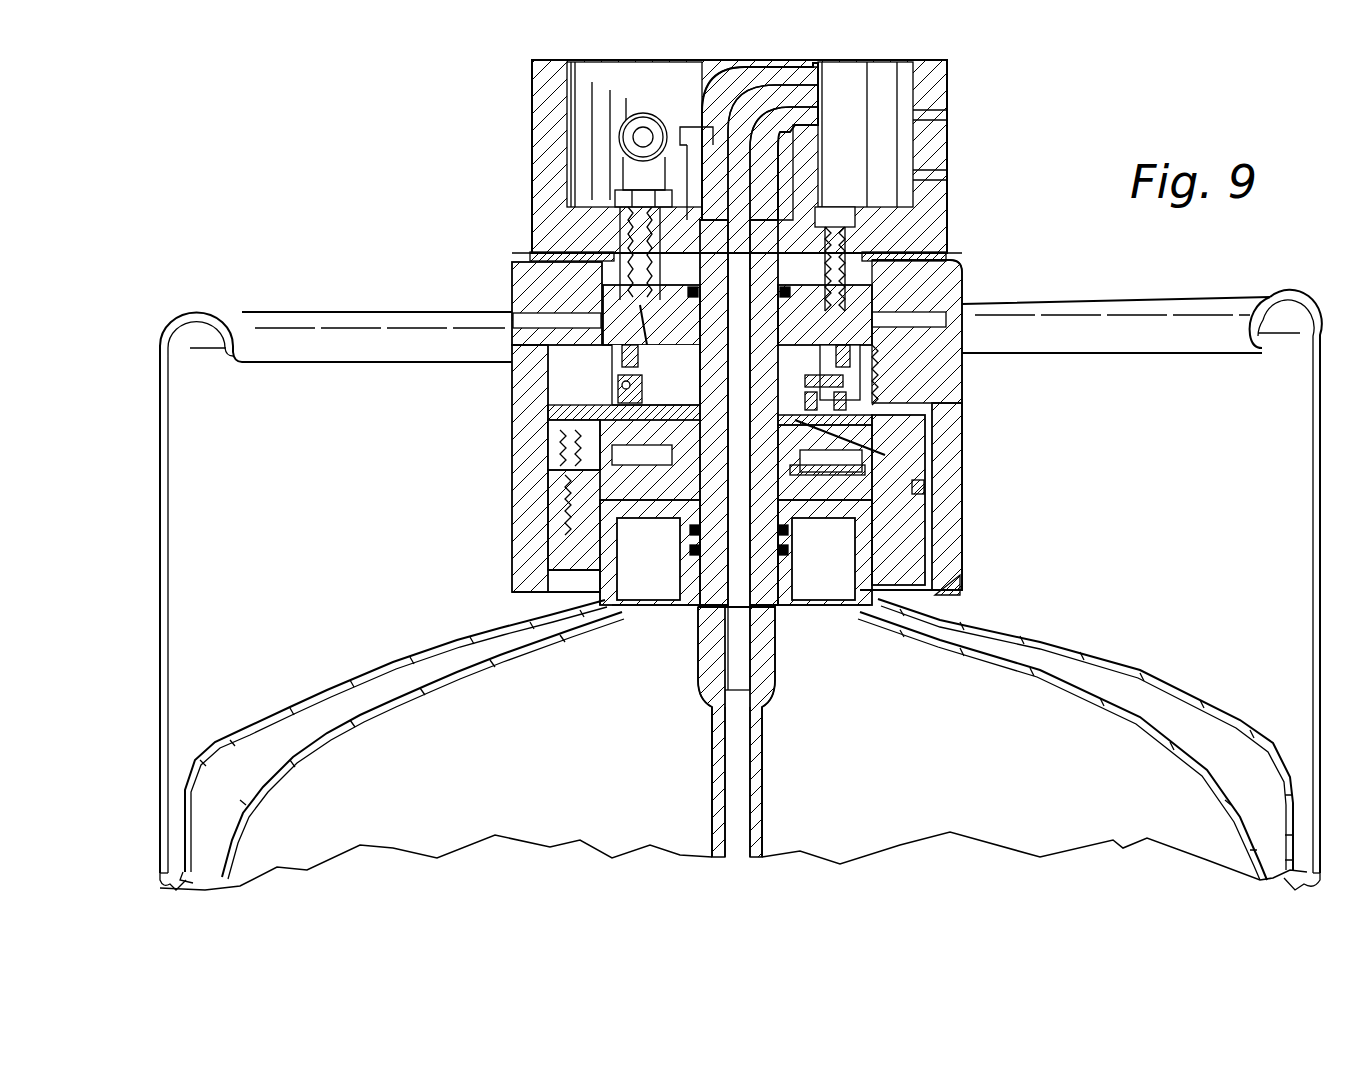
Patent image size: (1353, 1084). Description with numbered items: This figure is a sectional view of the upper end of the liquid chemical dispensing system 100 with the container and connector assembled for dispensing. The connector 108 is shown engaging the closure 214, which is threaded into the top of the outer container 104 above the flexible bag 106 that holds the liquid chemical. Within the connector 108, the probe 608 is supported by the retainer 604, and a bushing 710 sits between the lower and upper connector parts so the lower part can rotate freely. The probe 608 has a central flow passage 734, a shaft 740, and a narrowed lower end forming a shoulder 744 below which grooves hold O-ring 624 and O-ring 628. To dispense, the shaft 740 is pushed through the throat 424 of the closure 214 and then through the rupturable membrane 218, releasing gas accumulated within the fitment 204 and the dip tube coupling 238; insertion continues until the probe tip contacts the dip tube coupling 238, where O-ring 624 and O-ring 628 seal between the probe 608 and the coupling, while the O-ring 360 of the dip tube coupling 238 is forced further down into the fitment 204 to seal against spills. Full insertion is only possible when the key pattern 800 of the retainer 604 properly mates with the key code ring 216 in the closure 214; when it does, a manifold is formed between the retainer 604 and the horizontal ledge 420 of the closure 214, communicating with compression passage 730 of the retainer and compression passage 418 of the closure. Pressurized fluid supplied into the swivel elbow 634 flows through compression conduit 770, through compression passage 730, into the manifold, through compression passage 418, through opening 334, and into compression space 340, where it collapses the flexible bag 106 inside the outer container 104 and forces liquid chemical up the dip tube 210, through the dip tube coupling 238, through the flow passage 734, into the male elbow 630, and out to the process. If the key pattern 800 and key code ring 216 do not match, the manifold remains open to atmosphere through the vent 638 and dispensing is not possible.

The liquid chemical dispensing system 100 is at (257, 283).
The outer container 104 is at (1030, 630).
The flexible bag 106 is at (345, 722).
The connector 108 is at (495, 178).
The fitment 204 is at (940, 440).
The dip tube 210 is at (763, 826).
The closure 214 is at (640, 388).
The key code ring 216 is at (940, 398).
The rupturable membrane 218 is at (700, 446).
The dip tube coupling 238 is at (962, 588).
The opening 334 is at (580, 480).
The compression space 340 is at (415, 662).
The O-ring 360 is at (612, 530).
The compression passage 418 is at (628, 418).
The horizontal ledge 420 is at (700, 440).
The throat 424 is at (960, 418).
The retainer 604 is at (940, 380).
The probe 608 is at (860, 213).
The O-ring 624 is at (940, 500).
The O-ring 628 is at (940, 523).
The male elbow 630 is at (800, 120).
The swivel elbow 634 is at (632, 123).
The vent 638 is at (965, 312).
The bushing 710 is at (870, 288).
The compression passage 730 is at (650, 300).
The flow passage 734 is at (618, 380).
The shaft 740 is at (855, 262).
The shoulder 744 is at (935, 465).
The compression conduit 770 is at (625, 232).
The key pattern 800 is at (960, 410).